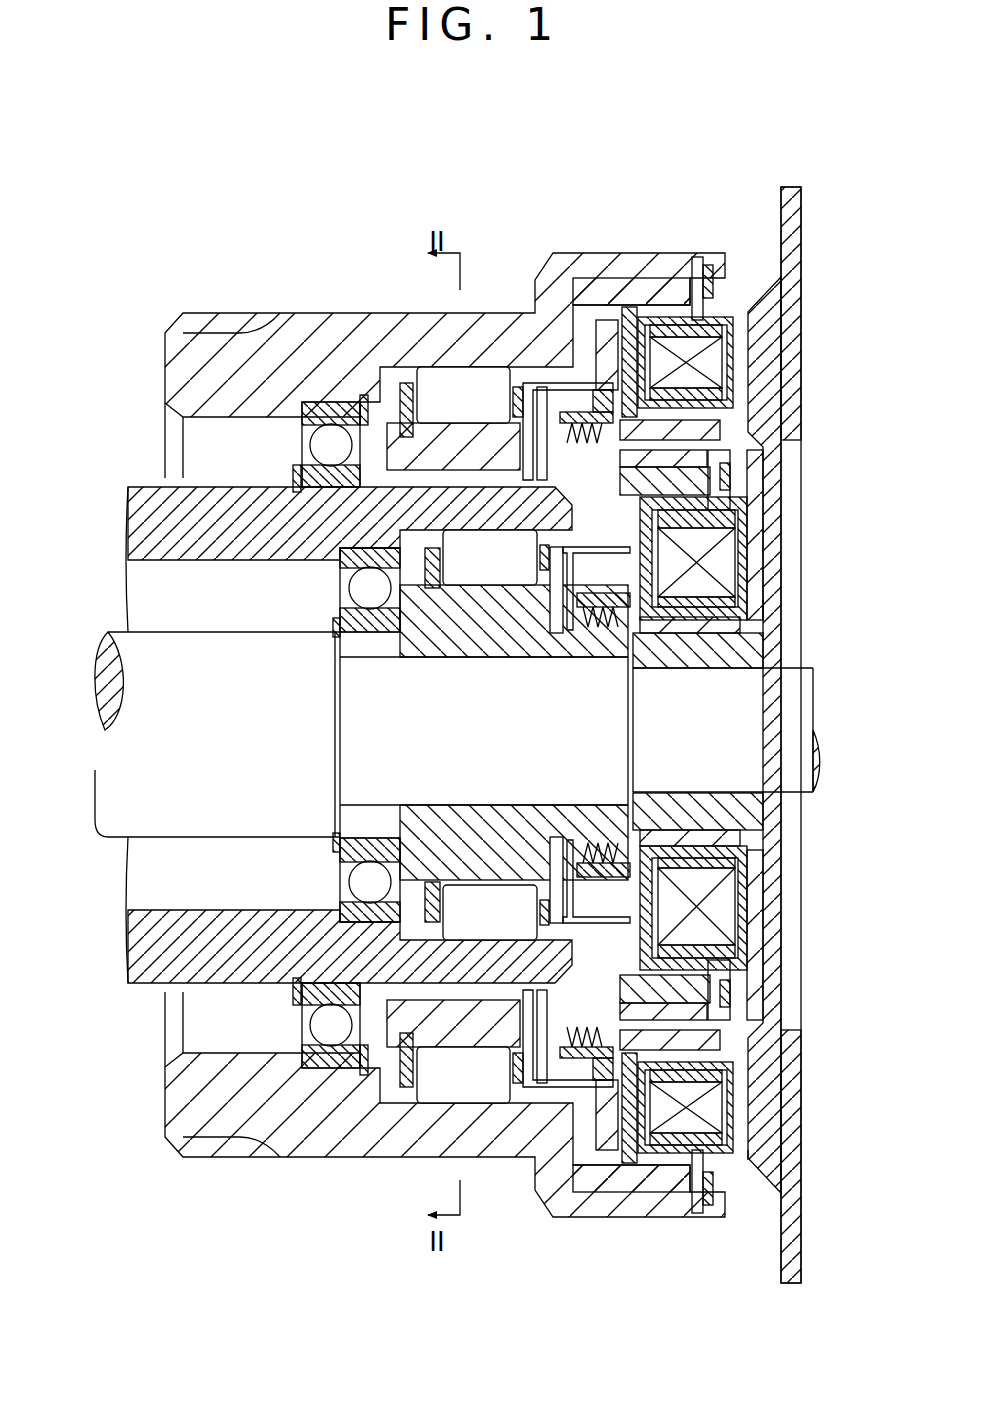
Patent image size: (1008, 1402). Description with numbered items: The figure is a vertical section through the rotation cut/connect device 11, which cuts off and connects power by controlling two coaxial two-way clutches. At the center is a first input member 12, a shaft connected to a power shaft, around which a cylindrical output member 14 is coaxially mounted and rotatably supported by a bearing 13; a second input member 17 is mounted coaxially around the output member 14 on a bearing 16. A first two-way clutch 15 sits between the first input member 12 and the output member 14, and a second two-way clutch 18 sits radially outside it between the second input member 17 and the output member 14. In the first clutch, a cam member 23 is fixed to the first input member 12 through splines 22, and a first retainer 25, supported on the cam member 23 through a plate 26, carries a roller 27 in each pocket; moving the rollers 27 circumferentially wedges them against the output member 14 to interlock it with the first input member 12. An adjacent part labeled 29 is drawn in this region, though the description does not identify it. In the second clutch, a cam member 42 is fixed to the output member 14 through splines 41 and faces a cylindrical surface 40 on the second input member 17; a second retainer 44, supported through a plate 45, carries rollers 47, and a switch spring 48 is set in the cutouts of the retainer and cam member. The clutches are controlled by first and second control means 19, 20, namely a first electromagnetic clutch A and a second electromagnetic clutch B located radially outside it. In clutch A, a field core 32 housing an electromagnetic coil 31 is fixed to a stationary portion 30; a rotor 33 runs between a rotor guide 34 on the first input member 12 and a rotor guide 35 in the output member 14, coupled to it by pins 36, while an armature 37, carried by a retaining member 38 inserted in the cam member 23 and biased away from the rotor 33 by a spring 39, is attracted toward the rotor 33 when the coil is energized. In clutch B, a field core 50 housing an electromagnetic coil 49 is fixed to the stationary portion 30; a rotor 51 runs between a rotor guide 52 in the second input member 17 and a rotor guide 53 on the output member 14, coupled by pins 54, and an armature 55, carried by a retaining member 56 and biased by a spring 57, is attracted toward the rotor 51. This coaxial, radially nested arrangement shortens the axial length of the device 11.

The rotation cut/connect device 11 is at (328, 305).
The first input member 12 is at (128, 742).
The bearing 13 is at (358, 588).
The output member 14 is at (138, 524).
The first two-way clutch 15 is at (360, 892).
The bearing 16 is at (322, 430).
The second input member 17 is at (180, 370).
The second two-way clutch 18 is at (468, 1124).
The first control means 19 is at (765, 558).
The second control means 20 is at (755, 364).
The splines 22 is at (412, 772).
The cam member 23 is at (475, 825).
The first retainer 25 is at (535, 557).
The plate 26 is at (445, 550).
The roller 27 is at (503, 893).
The plate 29 is at (553, 597).
The stationary portion 30 is at (803, 248).
The electromagnetic coil 31 is at (736, 553).
The field core 32 is at (750, 517).
The rotor 33 is at (765, 668).
The rotor guide 34 is at (763, 806).
The rotor guide 35 is at (692, 988).
The pins 36 is at (716, 968).
The armature 37 is at (722, 426).
The retaining member 38 is at (572, 892).
The spring 39 is at (603, 625).
The cylindrical surface 40 is at (442, 1095).
The splines 41 is at (388, 1050).
The cam member 42 is at (447, 1033).
The second retainer 44 is at (412, 393).
The plate 45 is at (390, 400).
The roller 47 is at (497, 1090).
The switch spring 48 is at (548, 395).
The electromagnetic coil 49 is at (696, 298).
The field core 50 is at (682, 332).
The rotor 51 is at (658, 322).
The rotor guide 52 is at (606, 296).
The rotor guide 53 is at (745, 412).
The pins 54 is at (703, 316).
The armature 55 is at (577, 395).
The retaining member 56 is at (558, 385).
The spring 57 is at (515, 390).
The first electromagnetic clutch A is at (767, 611).
The second electromagnetic clutch B is at (740, 1156).